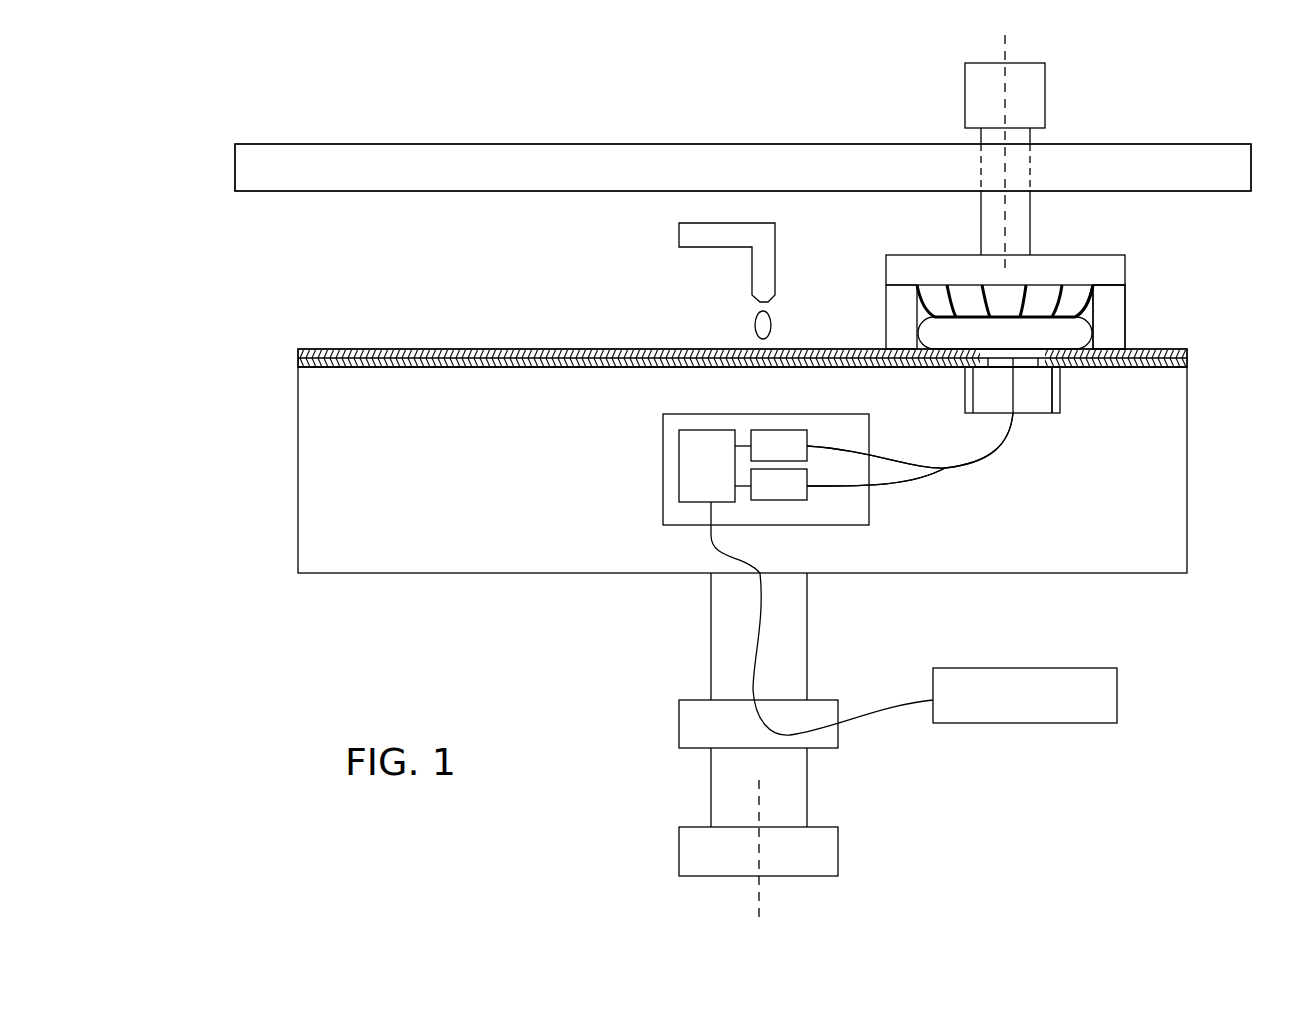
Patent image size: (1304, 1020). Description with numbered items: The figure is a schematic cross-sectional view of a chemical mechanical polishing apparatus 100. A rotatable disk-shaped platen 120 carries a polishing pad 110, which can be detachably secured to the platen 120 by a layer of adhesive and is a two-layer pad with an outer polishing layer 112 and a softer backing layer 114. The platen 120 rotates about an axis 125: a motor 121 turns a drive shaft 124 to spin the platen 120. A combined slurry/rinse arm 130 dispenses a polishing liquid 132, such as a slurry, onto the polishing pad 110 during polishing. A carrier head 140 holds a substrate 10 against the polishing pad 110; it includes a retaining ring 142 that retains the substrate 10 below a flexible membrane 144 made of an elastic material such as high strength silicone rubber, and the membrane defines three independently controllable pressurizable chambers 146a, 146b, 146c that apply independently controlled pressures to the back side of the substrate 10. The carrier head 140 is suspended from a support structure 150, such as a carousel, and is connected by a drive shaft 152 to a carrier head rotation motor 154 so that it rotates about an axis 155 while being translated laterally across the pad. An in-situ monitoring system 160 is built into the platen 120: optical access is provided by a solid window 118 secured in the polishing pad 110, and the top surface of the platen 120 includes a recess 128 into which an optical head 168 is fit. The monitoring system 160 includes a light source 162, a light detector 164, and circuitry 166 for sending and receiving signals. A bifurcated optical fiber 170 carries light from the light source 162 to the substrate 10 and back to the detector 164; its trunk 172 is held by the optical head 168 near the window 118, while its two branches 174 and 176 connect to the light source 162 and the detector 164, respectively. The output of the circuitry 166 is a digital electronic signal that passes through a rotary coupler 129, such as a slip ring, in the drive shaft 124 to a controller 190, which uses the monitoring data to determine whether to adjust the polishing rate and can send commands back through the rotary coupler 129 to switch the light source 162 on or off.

The polishing apparatus 100 is at (288, 98).
The support structure 150 is at (1218, 143).
The carrier head rotation motor 154 is at (965, 103).
The axis 155 is at (1005, 47).
The drive shaft 152 is at (981, 230).
The carrier head 140 is at (860, 300).
The retaining ring 142 is at (1125, 318).
The pressurizable chamber 146a is at (1007, 302).
The pressurizable chamber 146b is at (1045, 302).
The pressurizable chamber 146c is at (1077, 300).
The substrate 10 is at (1005, 333).
The flexible membrane 144 is at (1060, 318).
The polishing pad 110 is at (1175, 340).
The outer polishing layer 112 is at (1188, 355).
The backing layer 114 is at (1188, 364).
The platen 120 is at (1187, 497).
The recess 128 is at (965, 396).
The solid window 118 is at (1017, 360).
The optical head 168 is at (1055, 400).
The in-situ monitoring system 160 is at (630, 516).
The circuitry 166 is at (715, 466).
The light source 162 is at (779, 445).
The light detector 164 is at (779, 484).
The bifurcated optical fiber 170 is at (966, 480).
The trunk 172 is at (985, 468).
The branch 174 is at (833, 452).
The branch 176 is at (833, 490).
The slurry/rinse arm 130 is at (752, 265).
The polishing liquid 132 is at (755, 330).
The drive shaft 124 is at (807, 645).
The rotary coupler 129 is at (679, 736).
The motor 121 is at (838, 858).
The axis 125 is at (762, 898).
The controller 190 is at (1105, 723).